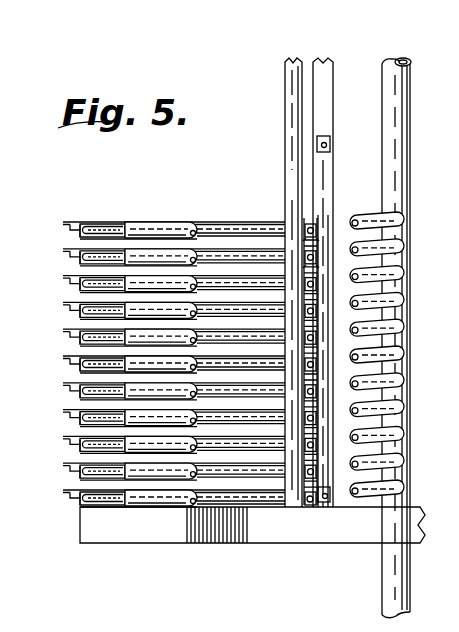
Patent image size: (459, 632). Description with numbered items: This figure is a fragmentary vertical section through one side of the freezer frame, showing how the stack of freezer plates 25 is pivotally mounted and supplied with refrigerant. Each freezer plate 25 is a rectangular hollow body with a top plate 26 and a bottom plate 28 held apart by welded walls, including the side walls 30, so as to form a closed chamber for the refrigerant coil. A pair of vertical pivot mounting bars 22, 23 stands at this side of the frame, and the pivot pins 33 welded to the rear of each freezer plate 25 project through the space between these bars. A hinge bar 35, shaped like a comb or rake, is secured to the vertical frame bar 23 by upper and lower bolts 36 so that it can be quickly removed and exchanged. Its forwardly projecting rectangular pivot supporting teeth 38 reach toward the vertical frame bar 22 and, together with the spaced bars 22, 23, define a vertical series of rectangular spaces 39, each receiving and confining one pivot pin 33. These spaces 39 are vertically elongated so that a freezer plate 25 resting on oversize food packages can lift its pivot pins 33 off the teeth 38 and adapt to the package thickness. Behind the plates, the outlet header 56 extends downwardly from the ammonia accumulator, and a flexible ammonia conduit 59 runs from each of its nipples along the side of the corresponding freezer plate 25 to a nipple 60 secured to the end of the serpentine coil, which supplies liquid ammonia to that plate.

The vertical pivot mounting bar 22 is at (289, 62).
The vertical pivot mounting bar 23 is at (326, 62).
The freezer plate 25 is at (68, 355).
The top plate 26 is at (68, 383).
The bottom plate 28 is at (85, 478).
The side wall 30 is at (75, 423).
The pivot pin 33 is at (303, 482).
The hinge bar 35 is at (328, 165).
The bolt 36 is at (331, 143).
The pivot supporting tooth 38 is at (313, 266).
The rectangular space 39 is at (320, 266).
The outlet header 56 is at (400, 103).
The flexible ammonia conduit 59 is at (152, 253).
The nipple 60 is at (98, 262).